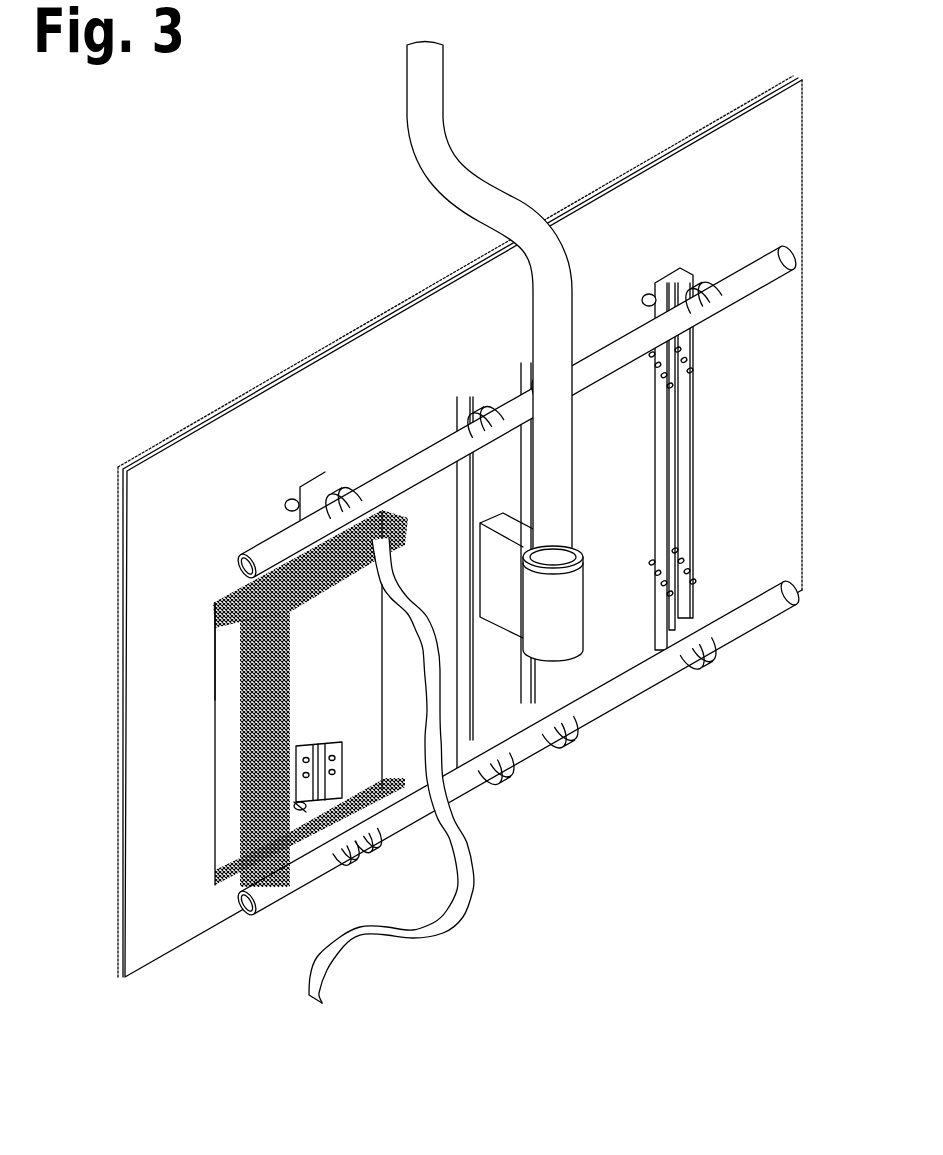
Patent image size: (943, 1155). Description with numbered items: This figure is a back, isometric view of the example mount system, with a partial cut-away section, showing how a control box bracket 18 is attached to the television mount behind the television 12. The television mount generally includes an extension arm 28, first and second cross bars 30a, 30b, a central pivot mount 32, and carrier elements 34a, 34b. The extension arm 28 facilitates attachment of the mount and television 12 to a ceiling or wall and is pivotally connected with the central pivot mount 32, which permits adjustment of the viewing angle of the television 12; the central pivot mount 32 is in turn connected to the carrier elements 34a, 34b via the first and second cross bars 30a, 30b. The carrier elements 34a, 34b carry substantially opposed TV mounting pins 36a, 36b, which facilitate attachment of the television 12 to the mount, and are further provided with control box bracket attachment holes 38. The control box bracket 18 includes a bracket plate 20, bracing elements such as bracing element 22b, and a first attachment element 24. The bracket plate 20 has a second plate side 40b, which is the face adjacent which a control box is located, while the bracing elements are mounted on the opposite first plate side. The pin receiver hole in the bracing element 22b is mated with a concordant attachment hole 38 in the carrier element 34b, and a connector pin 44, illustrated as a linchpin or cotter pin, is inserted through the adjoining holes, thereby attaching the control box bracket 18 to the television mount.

The television 12 is at (160, 519).
The control box bracket 18 is at (241, 698).
The bracket plate 20 is at (230, 732).
The bracing element 22b is at (340, 784).
The first attachment element 24 is at (230, 625).
The extension arm 28 is at (405, 116).
The first cross bar 30a is at (750, 252).
The second cross bar 30b is at (750, 629).
The central pivot mount 32 is at (566, 665).
The carrier element 34a is at (689, 461).
The carrier element 34b is at (324, 472).
The TV mounting pin 36a is at (643, 288).
The TV mounting pin 36b is at (643, 636).
The control box bracket attachment holes 38 is at (659, 393).
The second plate side 40b is at (349, 681).
The connector pin 44 is at (299, 804).